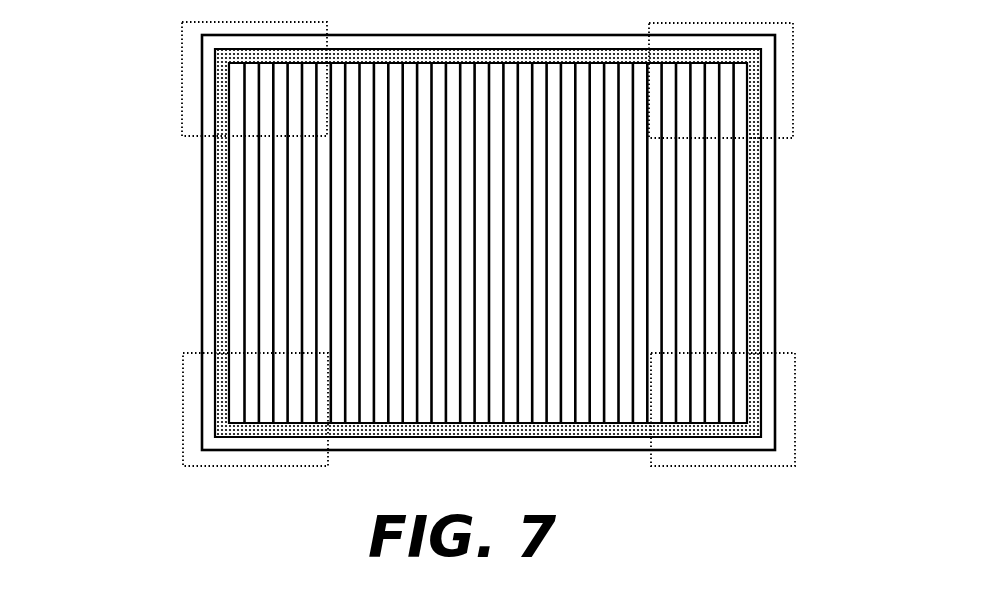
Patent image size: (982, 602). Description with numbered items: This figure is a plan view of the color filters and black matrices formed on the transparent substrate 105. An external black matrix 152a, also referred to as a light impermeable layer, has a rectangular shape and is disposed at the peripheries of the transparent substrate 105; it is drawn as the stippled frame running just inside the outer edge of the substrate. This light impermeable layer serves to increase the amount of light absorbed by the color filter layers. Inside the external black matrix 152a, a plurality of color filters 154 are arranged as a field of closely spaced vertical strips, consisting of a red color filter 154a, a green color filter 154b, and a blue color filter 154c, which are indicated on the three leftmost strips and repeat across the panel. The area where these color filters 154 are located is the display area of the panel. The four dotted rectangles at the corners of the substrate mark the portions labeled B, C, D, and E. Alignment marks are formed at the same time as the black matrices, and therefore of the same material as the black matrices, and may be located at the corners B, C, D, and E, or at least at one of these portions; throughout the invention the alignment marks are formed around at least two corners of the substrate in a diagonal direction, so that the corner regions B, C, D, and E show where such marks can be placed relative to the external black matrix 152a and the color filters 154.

The transparent substrate 105 is at (773, 308).
The external black matrix 152a is at (755, 225).
The color filters 154 is at (388, 243).
The red color filter 154a is at (240, 155).
The green color filter 154b is at (250, 187).
The blue color filter 154c is at (263, 218).
The corner B is at (251, 73).
The corner C is at (251, 419).
The corner D is at (726, 419).
The corner E is at (722, 73).